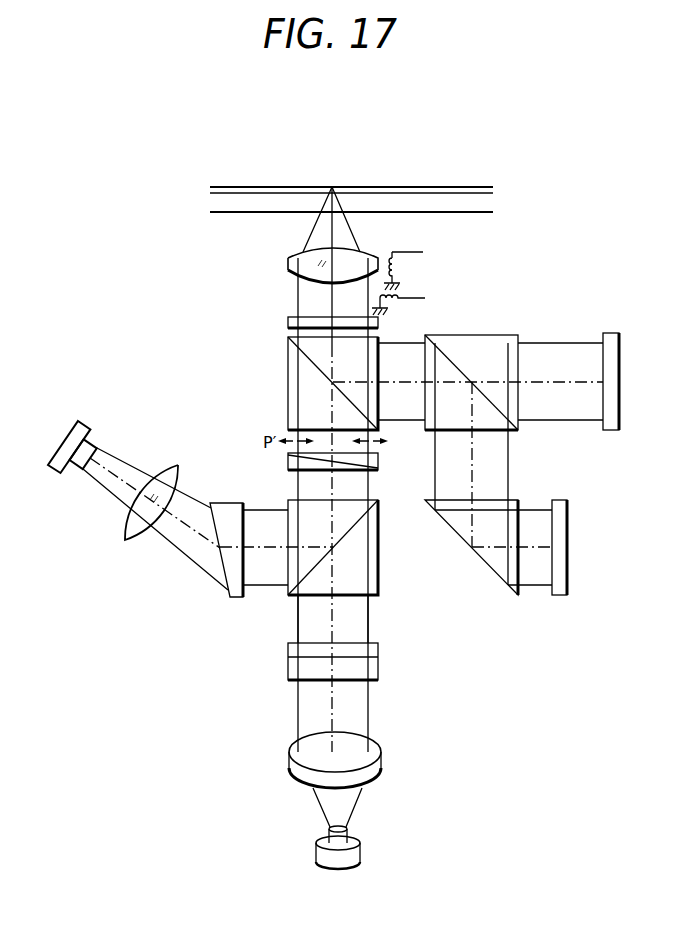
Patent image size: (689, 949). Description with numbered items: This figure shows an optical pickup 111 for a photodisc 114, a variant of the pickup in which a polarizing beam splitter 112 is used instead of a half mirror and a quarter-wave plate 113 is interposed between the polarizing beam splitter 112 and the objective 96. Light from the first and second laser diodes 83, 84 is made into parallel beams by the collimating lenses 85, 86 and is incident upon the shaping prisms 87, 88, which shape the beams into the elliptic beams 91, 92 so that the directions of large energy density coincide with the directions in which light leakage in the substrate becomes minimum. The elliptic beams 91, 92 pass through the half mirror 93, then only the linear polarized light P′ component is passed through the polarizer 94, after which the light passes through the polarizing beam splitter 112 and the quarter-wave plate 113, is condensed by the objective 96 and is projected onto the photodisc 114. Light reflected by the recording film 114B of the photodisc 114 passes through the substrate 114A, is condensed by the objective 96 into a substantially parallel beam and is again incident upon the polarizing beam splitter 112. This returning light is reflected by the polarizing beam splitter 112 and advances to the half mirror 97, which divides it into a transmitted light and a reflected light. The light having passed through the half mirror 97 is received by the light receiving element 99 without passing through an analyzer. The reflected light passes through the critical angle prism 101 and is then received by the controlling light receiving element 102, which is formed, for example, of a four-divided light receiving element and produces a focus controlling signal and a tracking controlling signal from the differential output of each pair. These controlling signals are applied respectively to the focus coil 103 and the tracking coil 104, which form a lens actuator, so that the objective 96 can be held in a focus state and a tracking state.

The first laser diode 83 is at (362, 855).
The second laser diode 84 is at (84, 423).
The collimating lens 85 is at (383, 757).
The collimating lens 86 is at (133, 540).
The shaping prism 87 is at (380, 665).
The shaping prism 88 is at (232, 592).
The elliptic beam 91 is at (370, 622).
The elliptic beam 92 is at (267, 510).
The half mirror 93 is at (381, 549).
The polarizer 94 is at (378, 466).
The objective 96 is at (288, 266).
The half mirror 97 is at (494, 333).
The light receiving element 99 is at (610, 333).
The critical angle prism 101 is at (492, 570).
The controlling light receiving element 102 is at (558, 598).
The focus coil 103 is at (396, 268).
The tracking coil 104 is at (395, 305).
The optical pickup 111 is at (165, 370).
The polarizing beam splitter 112 is at (288, 370).
The λ/4-plate 113 is at (288, 322).
The photodisc 114 is at (203, 199).
The substrate 114A is at (448, 202).
The recording film 114B is at (470, 186).